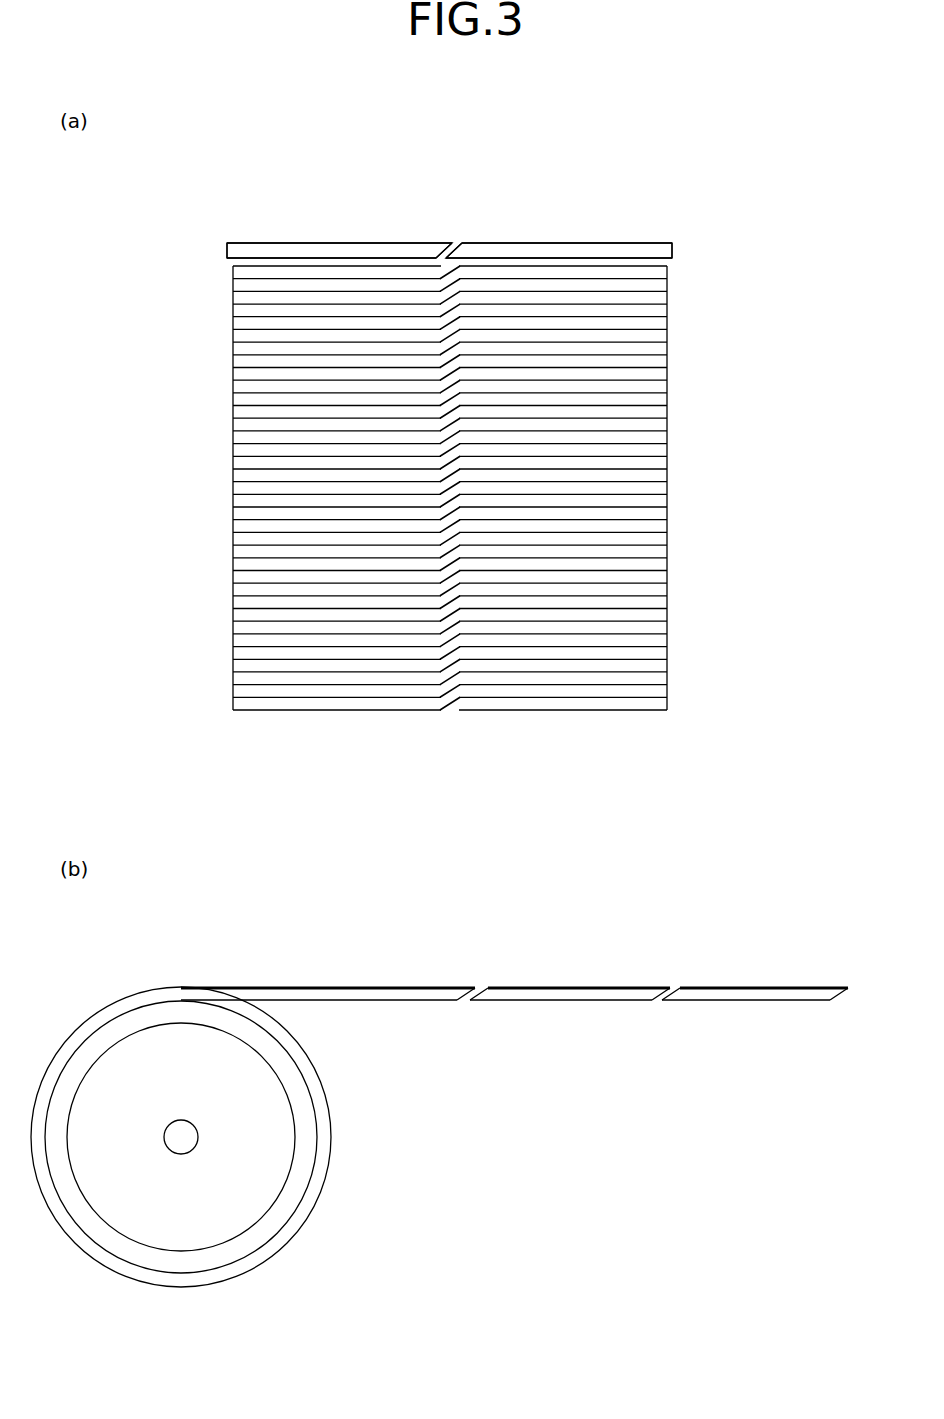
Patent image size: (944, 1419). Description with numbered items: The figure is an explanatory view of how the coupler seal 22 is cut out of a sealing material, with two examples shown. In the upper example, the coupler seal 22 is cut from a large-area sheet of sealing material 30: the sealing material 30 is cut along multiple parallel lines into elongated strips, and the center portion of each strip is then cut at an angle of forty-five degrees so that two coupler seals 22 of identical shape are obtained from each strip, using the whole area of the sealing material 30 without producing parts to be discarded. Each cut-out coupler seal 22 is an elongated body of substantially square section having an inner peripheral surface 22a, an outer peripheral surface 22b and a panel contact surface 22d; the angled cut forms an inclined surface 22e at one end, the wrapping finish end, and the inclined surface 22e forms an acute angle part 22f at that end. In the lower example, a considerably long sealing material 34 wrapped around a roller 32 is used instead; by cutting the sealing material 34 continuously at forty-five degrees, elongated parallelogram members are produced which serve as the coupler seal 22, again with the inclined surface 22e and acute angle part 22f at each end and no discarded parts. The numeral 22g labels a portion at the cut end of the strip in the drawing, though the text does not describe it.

The coupler seal 22 is at (525, 615).
The inner peripheral surface 22a is at (377, 243).
The outer peripheral surface 22b is at (317, 257).
The panel contact surface 22d is at (270, 250).
The inclined surface 22e is at (452, 243).
The acute angle part 22f is at (659, 988).
The lower end portion of strip 22g is at (652, 1000).
The sealing material 30 is at (700, 352).
The roller 32 is at (267, 1150).
The sealing material 34 is at (103, 1012).